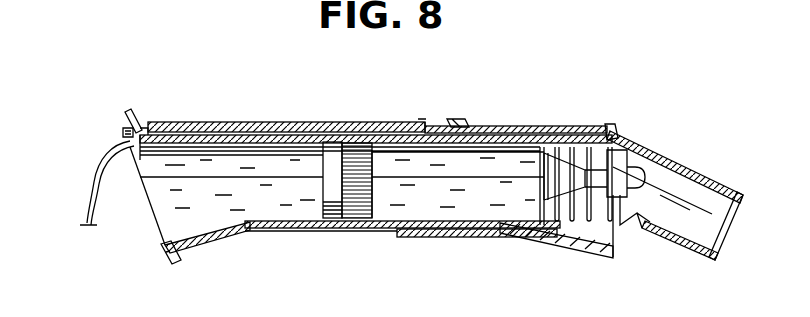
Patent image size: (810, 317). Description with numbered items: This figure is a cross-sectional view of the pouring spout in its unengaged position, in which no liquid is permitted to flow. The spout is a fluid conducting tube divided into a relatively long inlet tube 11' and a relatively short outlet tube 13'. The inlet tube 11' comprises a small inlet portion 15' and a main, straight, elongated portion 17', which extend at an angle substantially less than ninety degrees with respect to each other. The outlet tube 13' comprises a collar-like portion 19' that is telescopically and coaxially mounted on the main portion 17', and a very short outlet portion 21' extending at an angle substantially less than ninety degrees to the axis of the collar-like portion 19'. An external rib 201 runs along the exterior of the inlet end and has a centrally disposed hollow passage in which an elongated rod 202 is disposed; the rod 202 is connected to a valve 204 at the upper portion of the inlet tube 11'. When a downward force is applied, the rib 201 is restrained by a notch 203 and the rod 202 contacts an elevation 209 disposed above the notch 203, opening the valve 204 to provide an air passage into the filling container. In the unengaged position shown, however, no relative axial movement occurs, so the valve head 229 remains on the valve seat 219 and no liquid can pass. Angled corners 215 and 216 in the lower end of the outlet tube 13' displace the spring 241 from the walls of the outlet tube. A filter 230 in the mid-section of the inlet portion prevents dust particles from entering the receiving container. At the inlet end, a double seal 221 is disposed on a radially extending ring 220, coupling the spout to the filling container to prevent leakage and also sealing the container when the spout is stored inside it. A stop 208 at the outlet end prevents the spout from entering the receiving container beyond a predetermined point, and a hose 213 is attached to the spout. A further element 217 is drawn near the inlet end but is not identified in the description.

The external rib 201 is at (260, 121).
The elongated rod 202 is at (428, 124).
The notch 203 is at (455, 118).
The valve 204 is at (135, 115).
The stop 208 is at (550, 240).
The elevation 209 is at (467, 128).
The hose 213 is at (85, 197).
The angled corner 215 is at (612, 128).
The angled corner 216 is at (607, 240).
The end closure 217 is at (143, 172).
The valve seat 219 is at (140, 176).
The radially extending ring 220 is at (180, 258).
The double seal 221 is at (128, 120).
The valve head 229 is at (562, 166).
The filter 230 is at (333, 205).
The spring 241 is at (607, 145).
The inlet tube 11' is at (321, 256).
The outlet tube 13' is at (675, 194).
The inlet portion 15' is at (208, 249).
The main portion 17' is at (402, 256).
The collar-like portion 19' is at (477, 260).
The outlet portion 21' is at (679, 255).